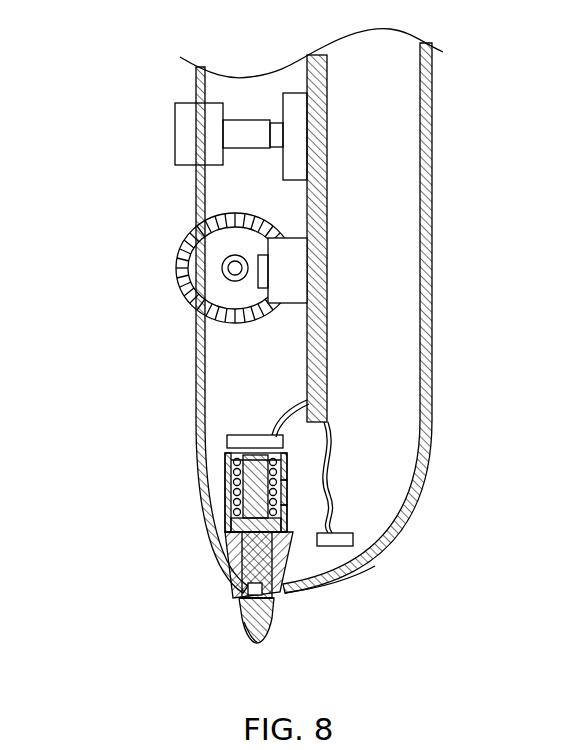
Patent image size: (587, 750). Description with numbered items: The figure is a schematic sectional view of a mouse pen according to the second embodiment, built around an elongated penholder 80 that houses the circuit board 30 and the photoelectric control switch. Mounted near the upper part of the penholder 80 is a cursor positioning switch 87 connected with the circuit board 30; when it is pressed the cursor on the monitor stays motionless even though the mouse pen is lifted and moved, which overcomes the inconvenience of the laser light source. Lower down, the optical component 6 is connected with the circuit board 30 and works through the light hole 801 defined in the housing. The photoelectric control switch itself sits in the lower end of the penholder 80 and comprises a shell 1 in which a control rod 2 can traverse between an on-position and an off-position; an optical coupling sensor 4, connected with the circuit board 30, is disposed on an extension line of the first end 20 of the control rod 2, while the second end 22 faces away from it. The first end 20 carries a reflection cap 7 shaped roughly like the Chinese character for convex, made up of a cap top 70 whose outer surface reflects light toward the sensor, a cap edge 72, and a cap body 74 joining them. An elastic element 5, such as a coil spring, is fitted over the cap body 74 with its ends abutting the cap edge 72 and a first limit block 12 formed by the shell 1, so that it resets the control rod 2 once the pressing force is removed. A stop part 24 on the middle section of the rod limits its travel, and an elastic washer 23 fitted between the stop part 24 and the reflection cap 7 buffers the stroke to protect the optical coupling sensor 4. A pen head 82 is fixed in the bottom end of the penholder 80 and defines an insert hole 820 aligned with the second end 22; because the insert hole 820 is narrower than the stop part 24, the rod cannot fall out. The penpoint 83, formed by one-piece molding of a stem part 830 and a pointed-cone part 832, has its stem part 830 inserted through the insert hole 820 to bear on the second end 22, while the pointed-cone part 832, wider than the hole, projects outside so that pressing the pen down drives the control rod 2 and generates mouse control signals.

The shell 1 is at (233, 467).
The control rod 2 is at (421, 483).
The optical coupling sensor 4 is at (283, 438).
The elastic element 5 is at (287, 458).
The optical component 6 is at (353, 538).
The reflection cap 7 is at (170, 505).
The first limit block 12 is at (227, 452).
The first end 20 is at (287, 482).
The second end 22 is at (289, 530).
The elastic washer 23 is at (230, 528).
The stop part 24 is at (287, 508).
The circuit board 30 is at (328, 266).
The cap top 70 is at (237, 488).
The cap edge 72 is at (233, 515).
The cap body 74 is at (237, 500).
The penholder 80 is at (195, 348).
The pen head 82 is at (276, 592).
The penpoint 83 is at (162, 634).
The cursor positioning switch 87 is at (185, 133).
The light hole 801 is at (330, 570).
The insert hole 820 is at (265, 618).
The stem part 830 is at (236, 600).
The pointed-cone part 832 is at (248, 632).